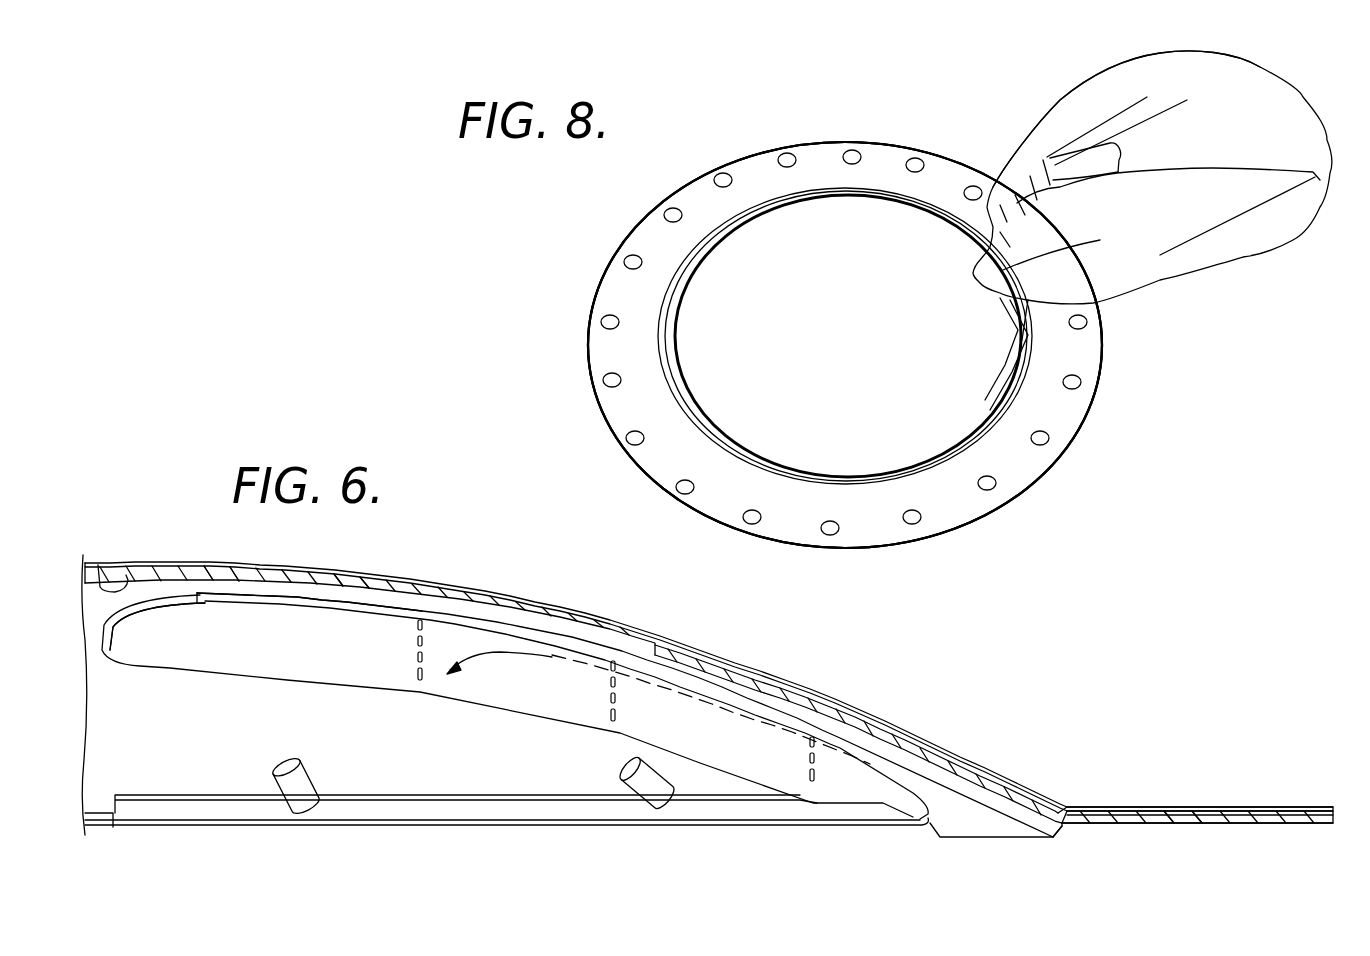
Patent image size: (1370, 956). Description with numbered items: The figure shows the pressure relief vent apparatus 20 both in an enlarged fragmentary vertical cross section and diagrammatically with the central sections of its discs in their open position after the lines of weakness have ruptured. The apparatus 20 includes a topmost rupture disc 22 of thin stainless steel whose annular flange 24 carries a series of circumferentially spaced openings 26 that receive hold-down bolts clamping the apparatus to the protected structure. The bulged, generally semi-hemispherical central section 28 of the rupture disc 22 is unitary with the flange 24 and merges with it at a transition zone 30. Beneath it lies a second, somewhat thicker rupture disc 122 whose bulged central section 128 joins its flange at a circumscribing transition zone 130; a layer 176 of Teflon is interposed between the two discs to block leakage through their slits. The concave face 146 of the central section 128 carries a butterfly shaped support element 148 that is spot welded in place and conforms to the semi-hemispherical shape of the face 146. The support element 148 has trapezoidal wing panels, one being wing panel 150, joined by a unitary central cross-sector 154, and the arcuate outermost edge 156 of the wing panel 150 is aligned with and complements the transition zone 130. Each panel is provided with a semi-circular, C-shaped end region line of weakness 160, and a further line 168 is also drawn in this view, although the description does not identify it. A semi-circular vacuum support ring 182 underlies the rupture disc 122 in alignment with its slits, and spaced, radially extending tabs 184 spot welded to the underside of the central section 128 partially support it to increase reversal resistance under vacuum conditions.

In FIG. 8, the vent apparatus 20 is at (810, 131).
In FIG. 8, the rupture disc 22 is at (632, 223).
In FIG. 6, the rupture disc 22 is at (477, 593).
In FIG. 8, the annular flange 24 is at (622, 289).
In FIG. 6, the annular flange 24 is at (1295, 805).
In FIG. 8, the openings 26 is at (1048, 440).
In FIG. 8, the central section 28 is at (1158, 282).
In FIG. 6, the central section 28 is at (230, 565).
In FIG. 8, the transition zone 30 is at (742, 459).
In FIG. 6, the transition zone 30 is at (1073, 801).
In FIG. 6, the second rupture disc 122 is at (1245, 827).
In FIG. 8, the central section 128 is at (1100, 93).
In FIG. 6, the central section 128 is at (171, 573).
In FIG. 6, the transition zone 130 is at (1063, 829).
In FIG. 6, the concave face 146 is at (96, 563).
In FIG. 8, the butterfly shaped support element 148 is at (1120, 153).
In FIG. 6, the butterfly shaped support element 148 is at (288, 679).
In FIG. 6, the wing panel 150 is at (167, 660).
In FIG. 6, the central cross-sector 154 is at (722, 680).
In FIG. 6, the arcuate outermost edge 156 is at (1005, 838).
In FIG. 6, the end region line of weakness 160 is at (539, 665).
In FIG. 6, the tear seam 168 is at (712, 697).
In FIG. 6, the layer of synthetic resin material 176 is at (327, 577).
In FIG. 6, the vacuum support ring 182 is at (455, 802).
In FIG. 6, the tabs 184 is at (300, 780).